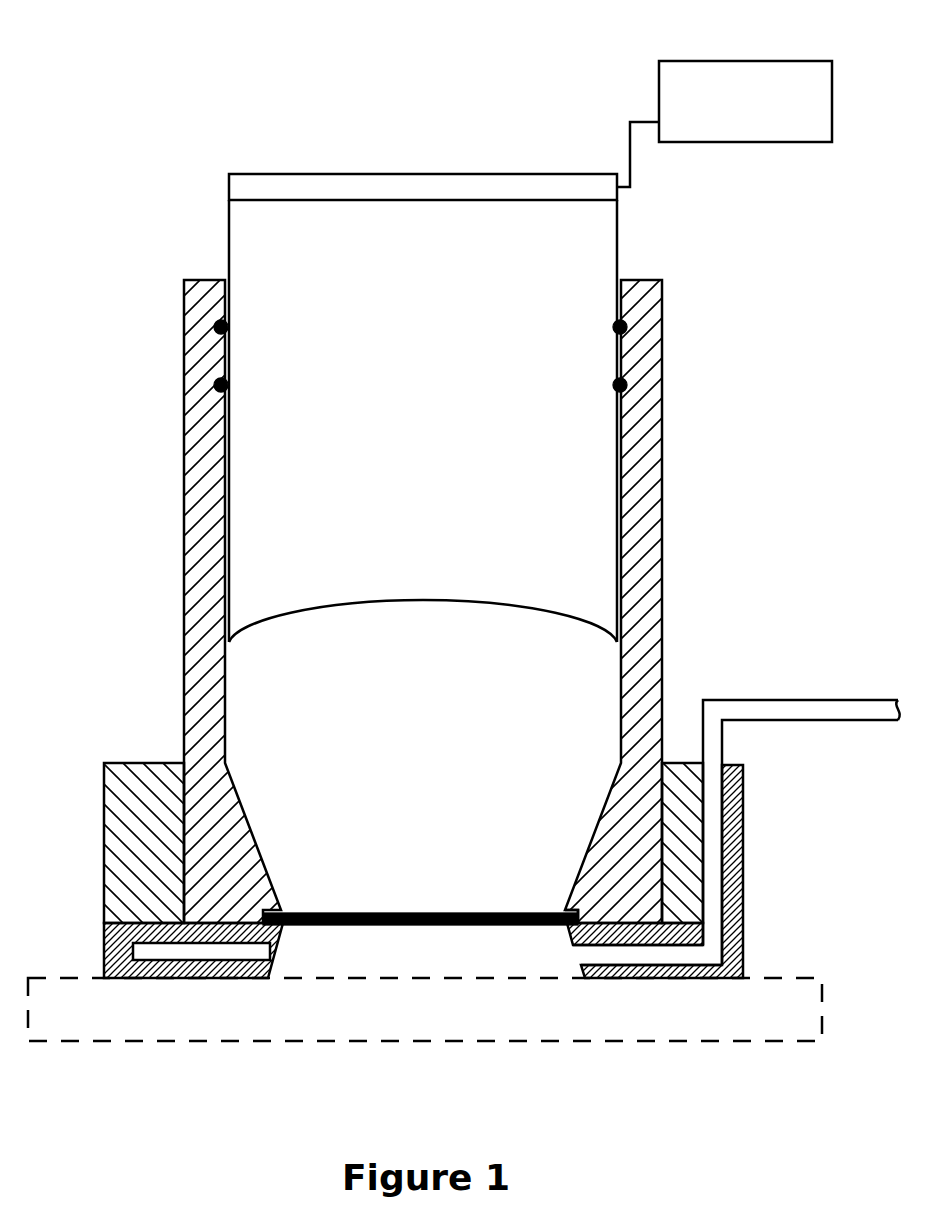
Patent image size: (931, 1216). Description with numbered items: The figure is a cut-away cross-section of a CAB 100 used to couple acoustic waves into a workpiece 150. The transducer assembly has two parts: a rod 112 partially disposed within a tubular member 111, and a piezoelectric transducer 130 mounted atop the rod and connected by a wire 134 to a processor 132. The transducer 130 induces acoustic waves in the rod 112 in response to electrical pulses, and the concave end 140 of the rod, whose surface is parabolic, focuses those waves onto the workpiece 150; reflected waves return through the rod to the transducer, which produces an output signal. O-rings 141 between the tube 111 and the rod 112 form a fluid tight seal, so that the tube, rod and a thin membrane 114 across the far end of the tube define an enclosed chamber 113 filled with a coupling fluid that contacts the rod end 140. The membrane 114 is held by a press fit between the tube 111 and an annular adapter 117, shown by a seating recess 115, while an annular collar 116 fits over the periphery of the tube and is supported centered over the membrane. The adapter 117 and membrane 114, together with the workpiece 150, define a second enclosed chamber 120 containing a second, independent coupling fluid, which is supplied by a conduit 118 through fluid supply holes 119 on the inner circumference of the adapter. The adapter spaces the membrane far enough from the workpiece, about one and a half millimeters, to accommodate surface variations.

The CAB 100 is at (134, 126).
The tubular member 111 is at (662, 441).
The rod 112 is at (243, 568).
The chamber 113 is at (392, 729).
The thin membrane 114 is at (418, 913).
The seating recess 115 is at (584, 918).
The collar 116 is at (104, 858).
The annular adapter 117 is at (104, 958).
The conduit 118 is at (826, 700).
The fluid supply holes 119 is at (278, 947).
The second chamber 120 is at (398, 964).
The piezoelectric transducer 130 is at (420, 187).
The processor 132 is at (745, 61).
The wire 134 is at (626, 137).
The concave end 140 is at (333, 612).
The O-rings 141 is at (218, 385).
The workpiece 150 is at (708, 1043).